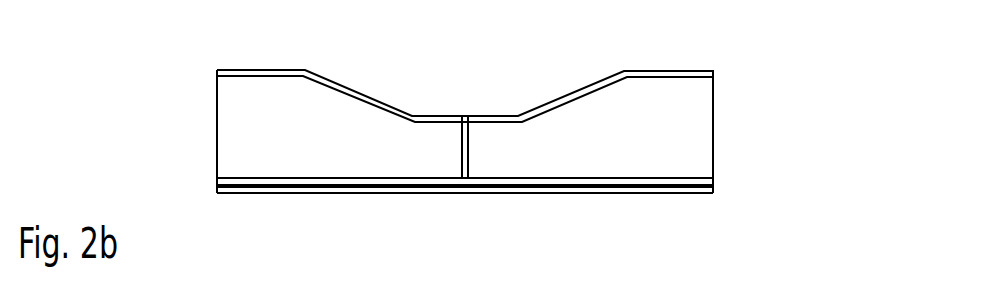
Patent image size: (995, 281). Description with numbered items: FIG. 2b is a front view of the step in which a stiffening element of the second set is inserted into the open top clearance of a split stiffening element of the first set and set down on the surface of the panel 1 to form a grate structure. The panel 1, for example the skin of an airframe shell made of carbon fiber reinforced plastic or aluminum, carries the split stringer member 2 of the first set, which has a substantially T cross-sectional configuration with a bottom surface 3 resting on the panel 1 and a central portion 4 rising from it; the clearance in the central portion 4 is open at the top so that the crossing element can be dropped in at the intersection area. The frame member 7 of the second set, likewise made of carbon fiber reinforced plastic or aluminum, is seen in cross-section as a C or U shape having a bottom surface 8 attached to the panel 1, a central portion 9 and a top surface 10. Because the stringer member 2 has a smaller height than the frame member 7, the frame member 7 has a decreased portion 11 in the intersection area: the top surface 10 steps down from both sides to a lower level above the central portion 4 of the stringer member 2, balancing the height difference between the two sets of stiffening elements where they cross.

The panel 1 is at (690, 195).
The split stringer member 2 is at (487, 132).
The bottom surface 3 is at (511, 183).
The central portion 4 is at (462, 156).
The frame member 7 is at (730, 108).
The bottom surface 8 is at (225, 184).
The central portion 9 is at (228, 114).
The top surface 10 is at (236, 75).
The decreased portion 11 is at (438, 115).